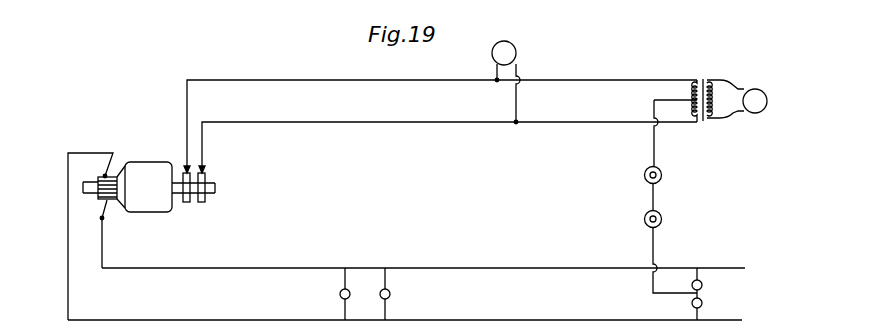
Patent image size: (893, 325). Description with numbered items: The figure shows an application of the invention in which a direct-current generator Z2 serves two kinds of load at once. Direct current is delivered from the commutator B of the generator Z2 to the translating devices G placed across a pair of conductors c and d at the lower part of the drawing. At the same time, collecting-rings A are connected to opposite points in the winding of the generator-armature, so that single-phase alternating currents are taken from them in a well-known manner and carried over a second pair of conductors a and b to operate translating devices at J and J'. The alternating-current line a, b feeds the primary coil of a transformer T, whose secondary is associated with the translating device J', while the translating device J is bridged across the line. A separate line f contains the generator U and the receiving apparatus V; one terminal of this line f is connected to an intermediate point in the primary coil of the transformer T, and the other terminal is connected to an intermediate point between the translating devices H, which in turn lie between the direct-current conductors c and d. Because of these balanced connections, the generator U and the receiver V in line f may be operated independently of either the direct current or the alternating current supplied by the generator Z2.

The line wire a is at (440, 118).
The line wire b is at (448, 139).
The line wire c is at (423, 260).
The line wire d is at (405, 311).
The translating device J is at (506, 82).
The translating device J' is at (742, 99).
The transformer T is at (683, 92).
The generator U is at (661, 175).
The receiving apparatus V is at (667, 213).
The line f is at (652, 198).
The translating devices H is at (703, 294).
The translating devices G is at (339, 294).
The direct-current generator Z2 is at (149, 187).
The commutator B is at (90, 236).
The collecting-rings A is at (194, 199).